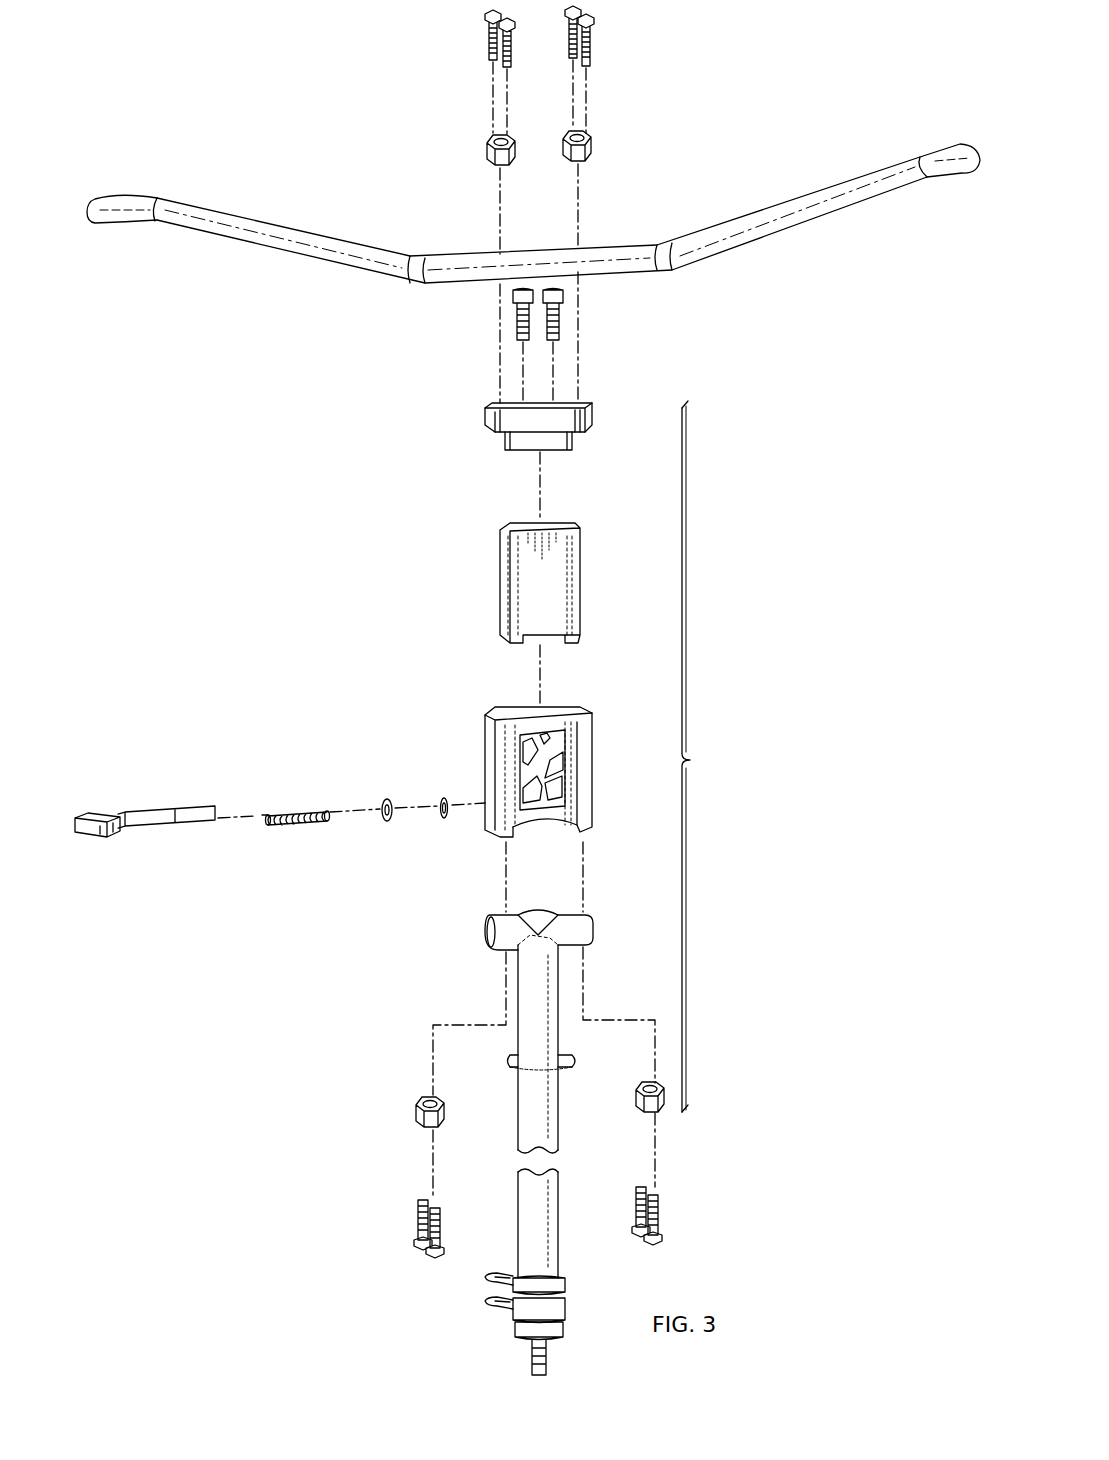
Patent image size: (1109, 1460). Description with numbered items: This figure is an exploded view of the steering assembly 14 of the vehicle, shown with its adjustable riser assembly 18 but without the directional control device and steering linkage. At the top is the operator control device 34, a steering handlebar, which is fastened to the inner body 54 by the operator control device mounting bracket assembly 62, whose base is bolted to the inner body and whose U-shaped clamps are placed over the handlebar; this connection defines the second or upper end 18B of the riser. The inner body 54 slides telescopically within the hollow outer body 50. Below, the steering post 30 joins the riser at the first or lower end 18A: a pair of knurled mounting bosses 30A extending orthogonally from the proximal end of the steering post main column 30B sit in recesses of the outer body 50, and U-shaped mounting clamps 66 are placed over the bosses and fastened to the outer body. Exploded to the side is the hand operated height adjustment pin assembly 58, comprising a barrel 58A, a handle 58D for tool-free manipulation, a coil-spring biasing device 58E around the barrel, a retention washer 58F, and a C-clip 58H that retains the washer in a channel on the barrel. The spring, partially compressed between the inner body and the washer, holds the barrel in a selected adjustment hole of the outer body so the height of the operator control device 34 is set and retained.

The steering assembly 14 is at (318, 116).
The operator control device 34 is at (795, 225).
The operator control device mounting bracket assembly 62 is at (483, 143).
The second or upper end 18B is at (471, 419).
The adjustable riser assembly 18 is at (705, 756).
The inner body 54 is at (500, 580).
The hollow outer body 50 is at (485, 752).
The first or lower end 18A is at (478, 828).
The hand operated height adjustment pin assembly 58 is at (155, 806).
The barrel 58A is at (170, 831).
The handle 58D is at (105, 840).
The biasing device 58E is at (300, 810).
The retention washer 58F is at (387, 826).
The C-clip 58H is at (440, 800).
The steering post 30 is at (512, 1195).
The mounting bosses 30A is at (490, 915).
The steering post main column 30B is at (560, 1235).
The U-shaped mounting clamp 66 is at (412, 1110).